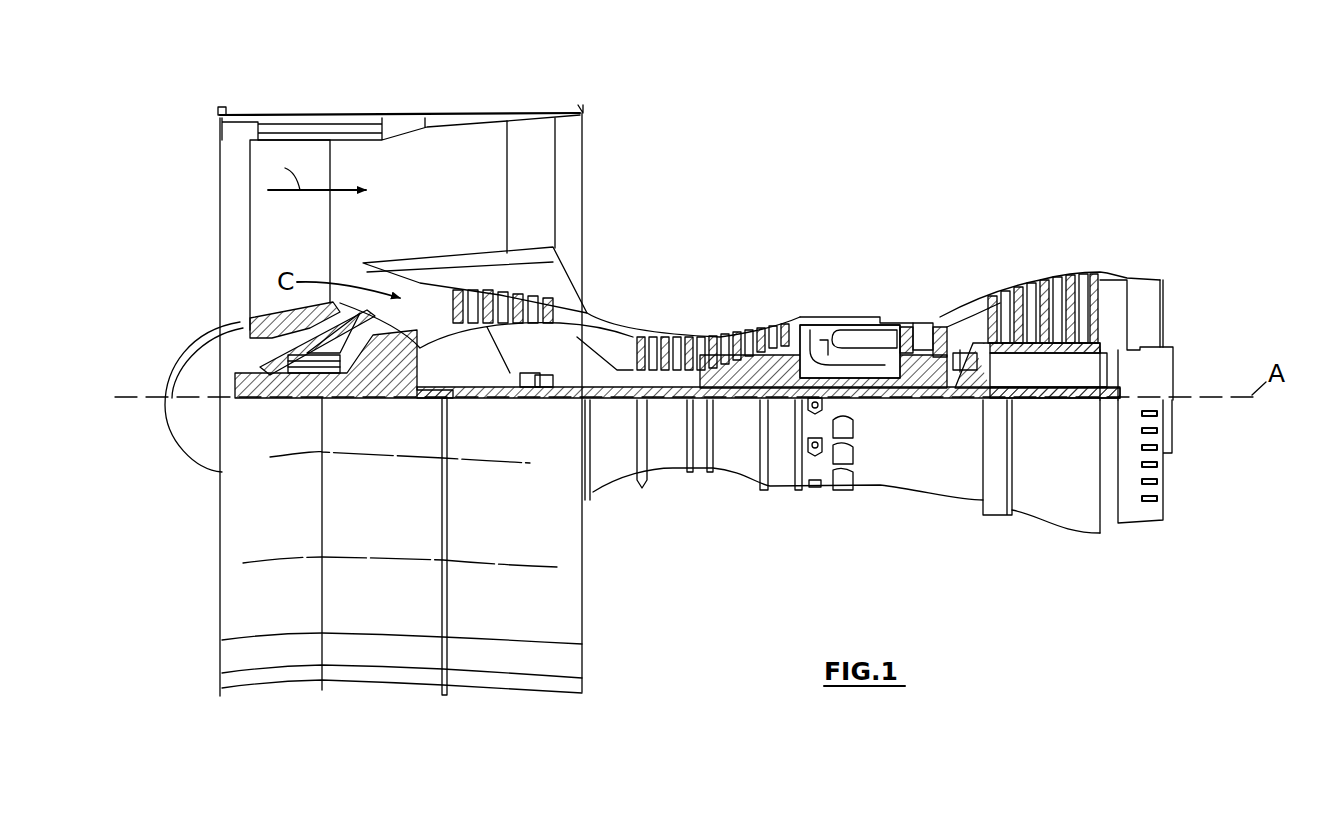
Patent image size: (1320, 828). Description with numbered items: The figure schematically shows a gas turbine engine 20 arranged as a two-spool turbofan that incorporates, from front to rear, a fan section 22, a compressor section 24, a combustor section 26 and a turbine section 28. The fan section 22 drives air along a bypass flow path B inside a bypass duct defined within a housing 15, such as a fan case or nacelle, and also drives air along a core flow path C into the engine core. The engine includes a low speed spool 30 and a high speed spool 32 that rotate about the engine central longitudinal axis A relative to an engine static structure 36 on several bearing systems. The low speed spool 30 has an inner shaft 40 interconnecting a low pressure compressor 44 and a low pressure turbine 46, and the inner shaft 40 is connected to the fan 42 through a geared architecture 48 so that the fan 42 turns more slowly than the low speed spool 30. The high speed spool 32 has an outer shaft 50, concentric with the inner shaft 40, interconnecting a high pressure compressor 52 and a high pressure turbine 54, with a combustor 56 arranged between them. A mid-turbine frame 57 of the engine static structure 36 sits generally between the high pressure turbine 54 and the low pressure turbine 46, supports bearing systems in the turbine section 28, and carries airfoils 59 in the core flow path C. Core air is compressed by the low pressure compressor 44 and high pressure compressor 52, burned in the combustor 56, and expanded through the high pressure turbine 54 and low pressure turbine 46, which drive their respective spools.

The housing 15 is at (400, 120).
The gas turbine engine 20 is at (862, 162).
The fan section 22 is at (333, 106).
The compressor section 24 is at (638, 303).
The combustor section 26 is at (855, 300).
The turbine section 28 is at (1005, 256).
The low speed spool 30 is at (742, 402).
The high speed spool 32 is at (782, 322).
The engine static structure 36 is at (780, 492).
The inner shaft 40 is at (607, 403).
The fan 42 is at (305, 243).
The low pressure compressor 44 is at (520, 298).
The low pressure turbine 46 is at (1050, 300).
The geared architecture 48 is at (400, 399).
The outer shaft 50 is at (865, 400).
The high pressure compressor 52 is at (710, 325).
The high pressure turbine 54 is at (920, 345).
The combustor 56 is at (862, 340).
The mid-turbine frame 57 is at (968, 306).
The airfoils 59 is at (1003, 372).